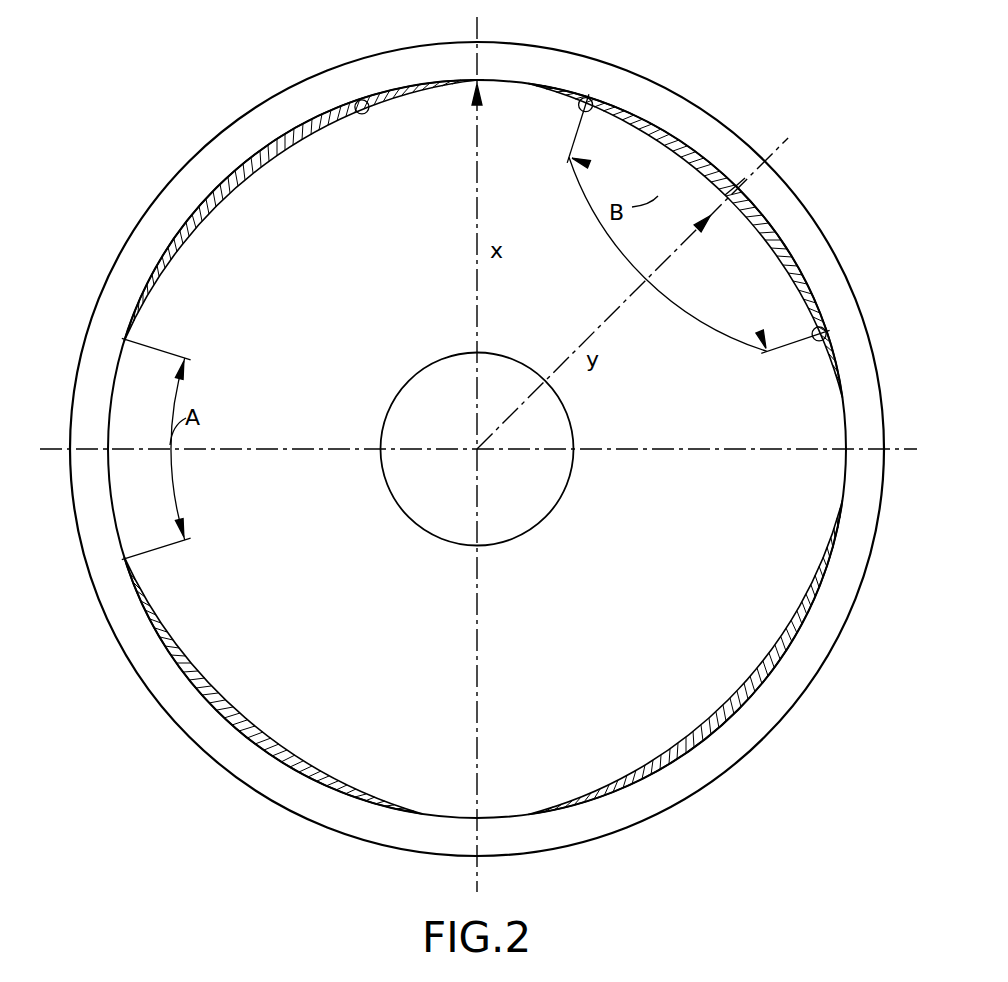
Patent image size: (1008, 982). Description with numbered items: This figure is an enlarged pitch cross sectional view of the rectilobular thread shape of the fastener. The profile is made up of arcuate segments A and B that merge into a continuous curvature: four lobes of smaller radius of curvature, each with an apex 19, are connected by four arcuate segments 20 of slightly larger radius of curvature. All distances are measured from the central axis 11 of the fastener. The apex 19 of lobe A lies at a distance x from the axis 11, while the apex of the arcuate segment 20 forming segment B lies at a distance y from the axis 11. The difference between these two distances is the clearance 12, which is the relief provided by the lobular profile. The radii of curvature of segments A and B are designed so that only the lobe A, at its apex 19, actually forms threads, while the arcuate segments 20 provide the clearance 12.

The axis 11 is at (477, 452).
The clearance 12 is at (249, 158).
The apex of the lobe 19 is at (477, 80).
The arcuate segment 20 is at (737, 187).